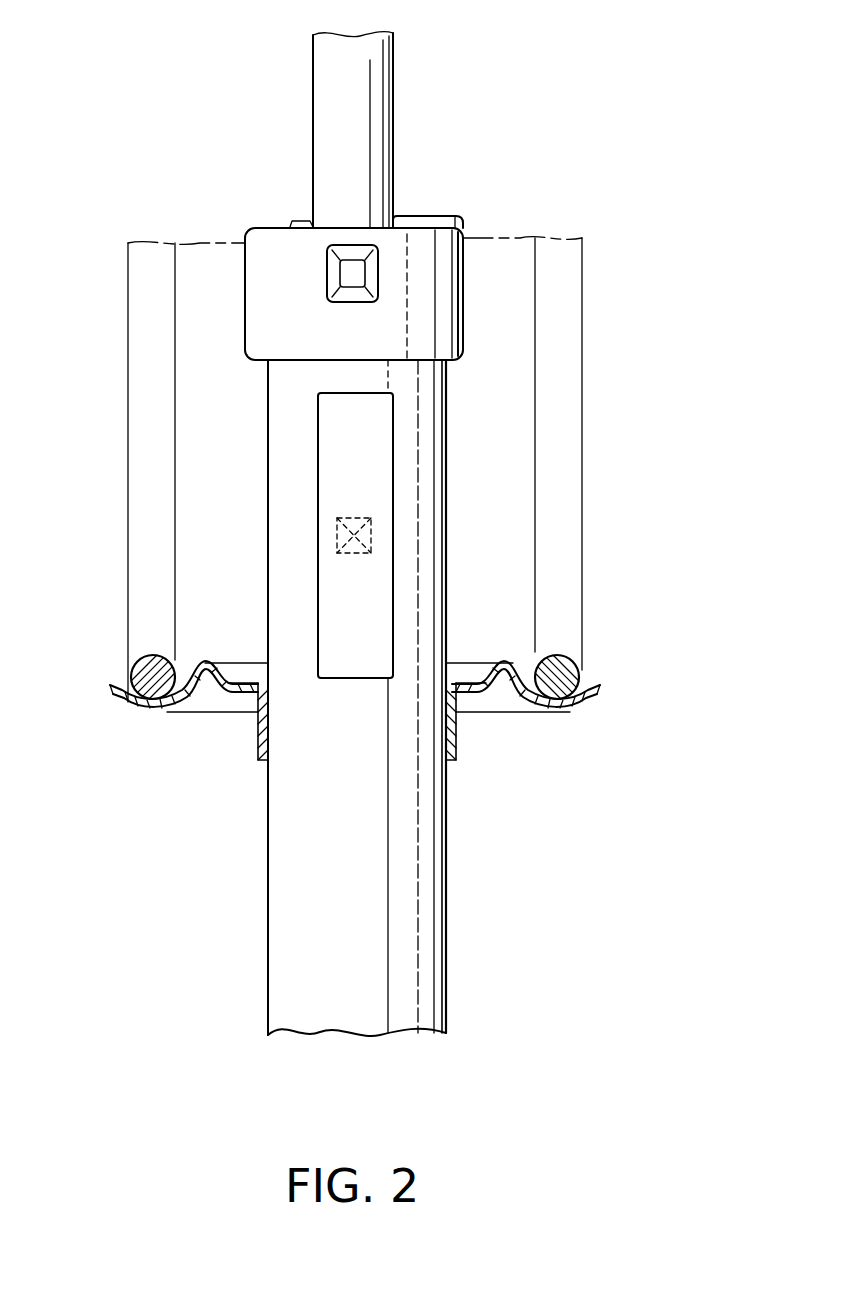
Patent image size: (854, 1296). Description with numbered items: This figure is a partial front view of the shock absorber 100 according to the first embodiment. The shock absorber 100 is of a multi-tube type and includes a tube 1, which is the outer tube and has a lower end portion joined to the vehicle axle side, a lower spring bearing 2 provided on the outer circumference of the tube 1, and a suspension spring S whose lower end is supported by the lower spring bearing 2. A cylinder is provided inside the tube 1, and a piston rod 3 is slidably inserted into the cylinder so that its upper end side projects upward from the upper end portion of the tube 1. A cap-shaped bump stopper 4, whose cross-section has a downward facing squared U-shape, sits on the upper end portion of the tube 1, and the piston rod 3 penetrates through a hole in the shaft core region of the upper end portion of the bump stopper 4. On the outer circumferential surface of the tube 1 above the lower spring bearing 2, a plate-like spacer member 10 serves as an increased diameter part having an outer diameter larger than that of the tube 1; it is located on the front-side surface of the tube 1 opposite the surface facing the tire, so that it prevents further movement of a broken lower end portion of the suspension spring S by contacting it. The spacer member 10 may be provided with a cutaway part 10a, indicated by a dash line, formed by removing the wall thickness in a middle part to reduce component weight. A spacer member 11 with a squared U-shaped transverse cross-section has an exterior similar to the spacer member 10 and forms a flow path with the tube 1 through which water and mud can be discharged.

The tube 1 is at (268, 920).
The lower spring bearing 2 is at (123, 708).
The piston rod 3 is at (313, 118).
The bump stopper 4 is at (268, 228).
The spacer member 10 is at (350, 535).
The cutaway part 10a is at (337, 540).
The spacer member 11 is at (385, 607).
The shock absorber 100 is at (475, 116).
The suspension spring S is at (579, 669).